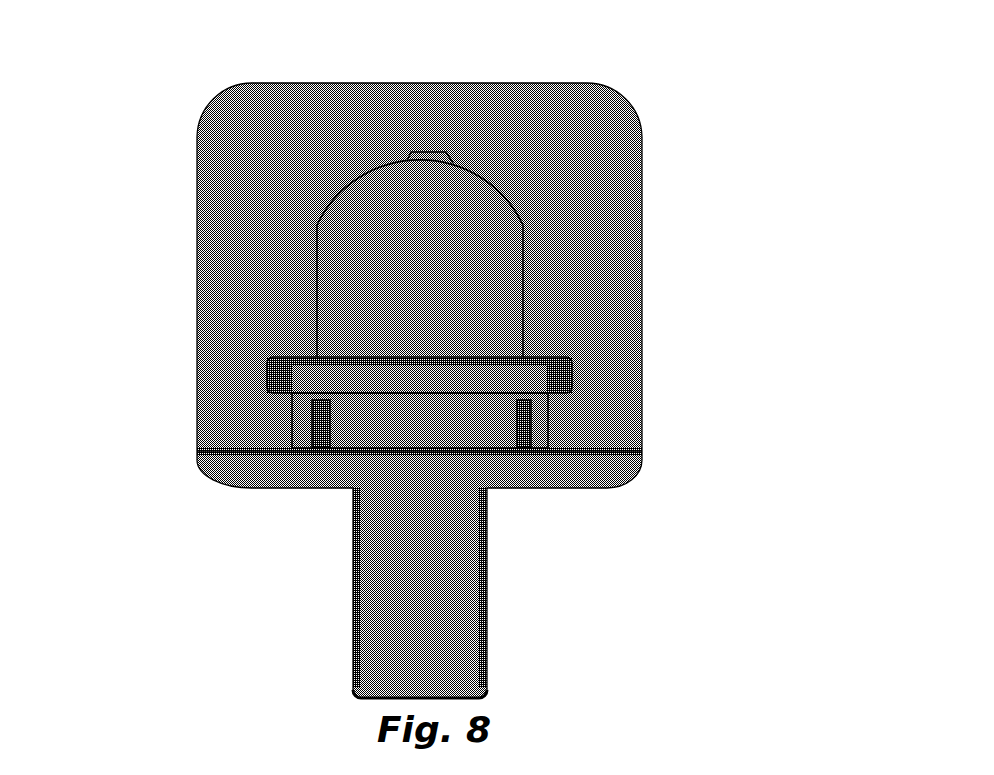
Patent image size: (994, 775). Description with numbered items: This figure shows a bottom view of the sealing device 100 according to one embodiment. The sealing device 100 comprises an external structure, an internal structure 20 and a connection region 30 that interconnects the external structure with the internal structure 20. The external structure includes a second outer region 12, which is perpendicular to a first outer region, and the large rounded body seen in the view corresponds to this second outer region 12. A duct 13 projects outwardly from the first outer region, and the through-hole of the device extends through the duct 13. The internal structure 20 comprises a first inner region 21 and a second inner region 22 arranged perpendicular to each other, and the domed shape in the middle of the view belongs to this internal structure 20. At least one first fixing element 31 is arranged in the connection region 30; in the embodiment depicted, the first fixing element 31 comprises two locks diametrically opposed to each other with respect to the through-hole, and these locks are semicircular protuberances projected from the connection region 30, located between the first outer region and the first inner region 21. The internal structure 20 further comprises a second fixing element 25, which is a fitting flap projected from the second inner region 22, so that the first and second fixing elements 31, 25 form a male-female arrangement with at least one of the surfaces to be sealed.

The sealing device 100 is at (433, 378).
The second outer region 12 is at (583, 263).
The duct 13 is at (440, 591).
The internal structure 20 is at (304, 208).
The first inner region 21 is at (505, 383).
The second inner region 22 is at (393, 275).
The second fixing element 25 is at (412, 158).
The connection region 30 is at (400, 430).
The first fixing element 31 is at (298, 420).